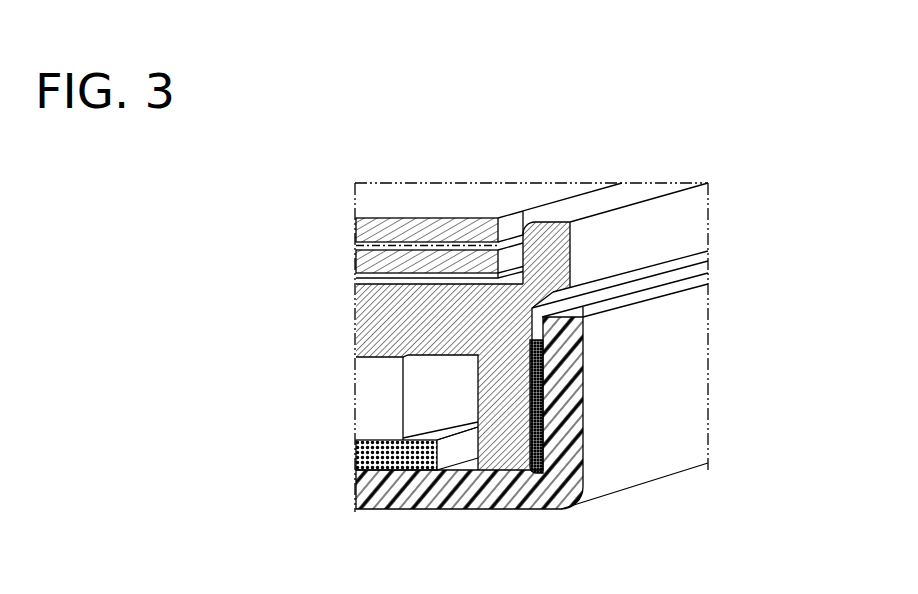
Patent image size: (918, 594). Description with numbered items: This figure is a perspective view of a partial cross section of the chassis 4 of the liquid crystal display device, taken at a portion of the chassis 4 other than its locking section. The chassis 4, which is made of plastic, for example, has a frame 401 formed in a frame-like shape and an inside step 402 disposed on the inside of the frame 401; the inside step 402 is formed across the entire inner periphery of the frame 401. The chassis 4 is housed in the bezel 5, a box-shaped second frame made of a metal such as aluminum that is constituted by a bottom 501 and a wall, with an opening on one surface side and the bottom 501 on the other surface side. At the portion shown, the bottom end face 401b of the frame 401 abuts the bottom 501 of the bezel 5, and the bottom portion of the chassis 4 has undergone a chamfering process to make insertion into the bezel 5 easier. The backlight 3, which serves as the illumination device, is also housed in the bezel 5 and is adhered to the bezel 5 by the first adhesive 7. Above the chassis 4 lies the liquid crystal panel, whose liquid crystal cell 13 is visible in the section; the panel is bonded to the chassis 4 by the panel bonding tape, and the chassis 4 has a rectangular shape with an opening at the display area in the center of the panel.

The backlight 3 is at (357, 407).
The chassis 4 is at (544, 239).
The bezel 5 is at (679, 354).
The first adhesive 7 is at (367, 452).
The liquid crystal cell 13 is at (400, 220).
The frame 401 is at (540, 452).
The bottom end face 401b is at (489, 475).
The inside step 402 is at (461, 302).
The bottom 501 is at (381, 498).